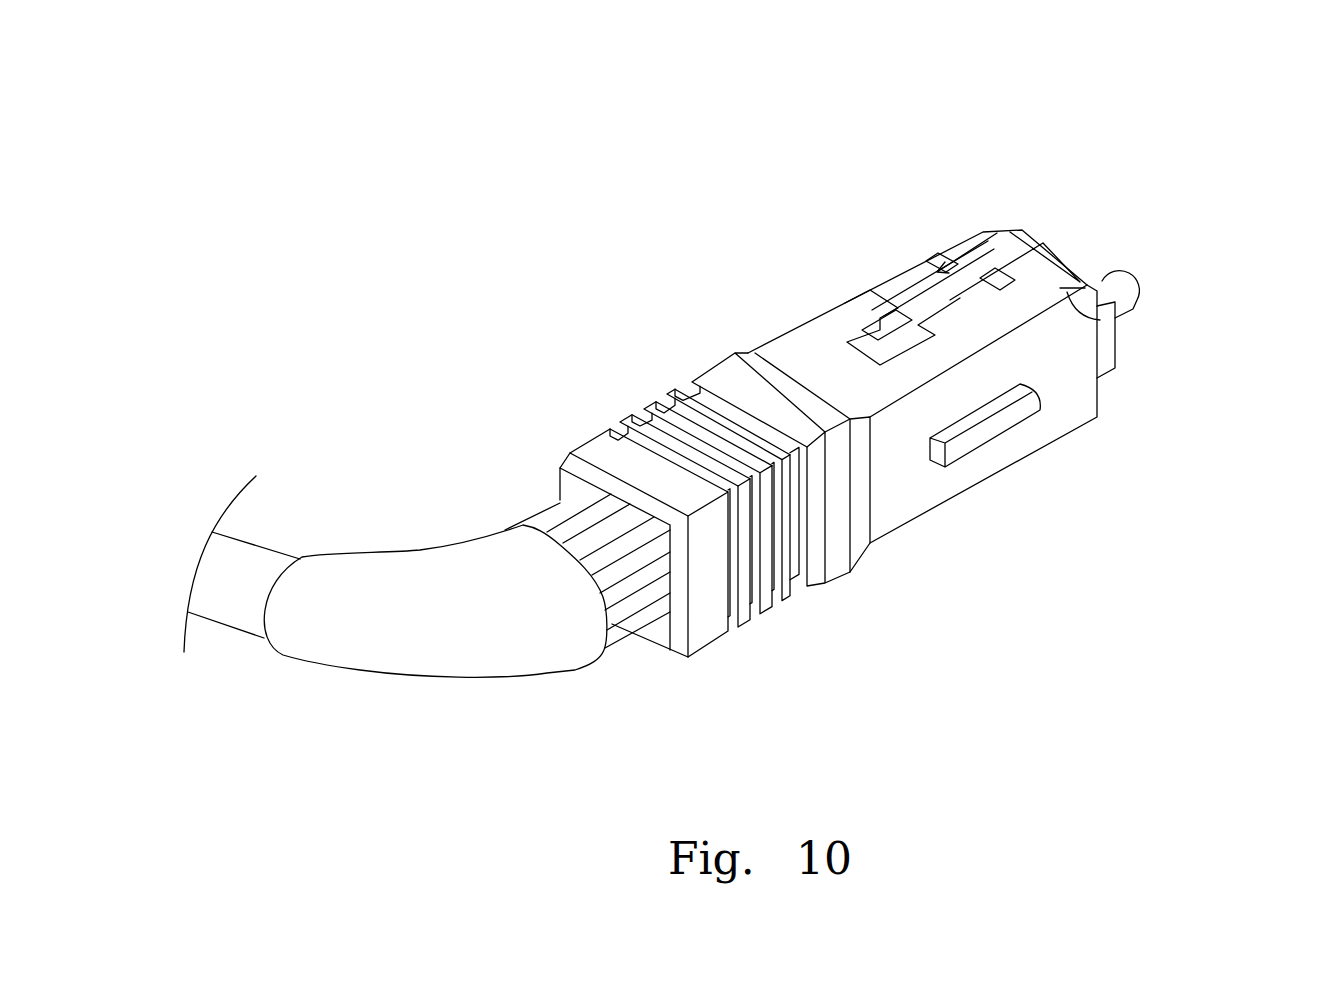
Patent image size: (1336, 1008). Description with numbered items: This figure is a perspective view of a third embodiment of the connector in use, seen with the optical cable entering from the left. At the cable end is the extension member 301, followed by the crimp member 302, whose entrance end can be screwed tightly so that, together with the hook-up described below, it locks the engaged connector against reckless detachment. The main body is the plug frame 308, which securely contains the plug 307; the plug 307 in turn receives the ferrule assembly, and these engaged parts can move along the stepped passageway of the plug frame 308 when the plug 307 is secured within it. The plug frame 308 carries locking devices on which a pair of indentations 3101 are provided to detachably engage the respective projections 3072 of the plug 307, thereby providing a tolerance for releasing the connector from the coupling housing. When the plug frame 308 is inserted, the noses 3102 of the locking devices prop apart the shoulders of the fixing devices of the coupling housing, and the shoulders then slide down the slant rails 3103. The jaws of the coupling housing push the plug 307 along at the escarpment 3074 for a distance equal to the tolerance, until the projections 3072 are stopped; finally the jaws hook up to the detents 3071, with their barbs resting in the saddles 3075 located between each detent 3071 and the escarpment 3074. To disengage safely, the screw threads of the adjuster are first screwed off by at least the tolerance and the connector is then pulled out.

The extension member 301 is at (453, 643).
The crimp member 302 is at (630, 622).
The plug 307 is at (1103, 345).
The plug frame 308 is at (902, 490).
The detent 3071 is at (1063, 260).
The projection 3072 is at (1045, 410).
The escarpment 3074 is at (948, 260).
The saddle 3075 is at (1010, 278).
The indentation 3101 is at (865, 337).
The nose 3102 is at (968, 245).
The slant rail 3103 is at (890, 290).